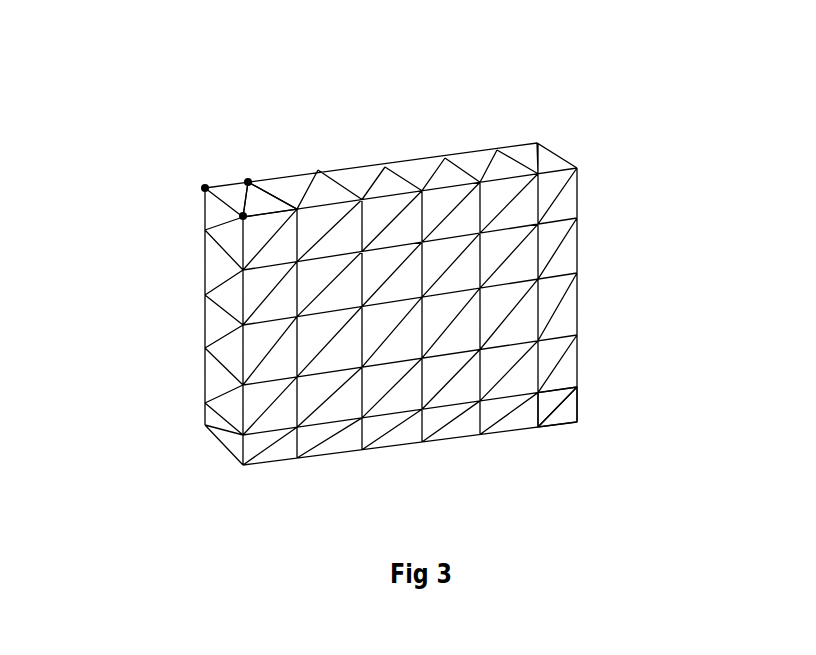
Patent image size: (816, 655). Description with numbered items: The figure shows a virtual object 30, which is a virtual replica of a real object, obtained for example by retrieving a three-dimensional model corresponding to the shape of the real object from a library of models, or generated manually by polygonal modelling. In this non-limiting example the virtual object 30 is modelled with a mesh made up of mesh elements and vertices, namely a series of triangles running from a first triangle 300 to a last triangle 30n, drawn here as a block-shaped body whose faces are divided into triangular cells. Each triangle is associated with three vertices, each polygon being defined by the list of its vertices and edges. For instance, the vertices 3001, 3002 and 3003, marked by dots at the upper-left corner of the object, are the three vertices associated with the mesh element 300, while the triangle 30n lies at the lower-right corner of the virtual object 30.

The virtual object 30 is at (550, 133).
The mesh element 300 is at (233, 197).
The vertex 3001 is at (205, 188).
The vertex 3002 is at (243, 216).
The vertex 3003 is at (248, 182).
The mesh element 30n is at (565, 410).